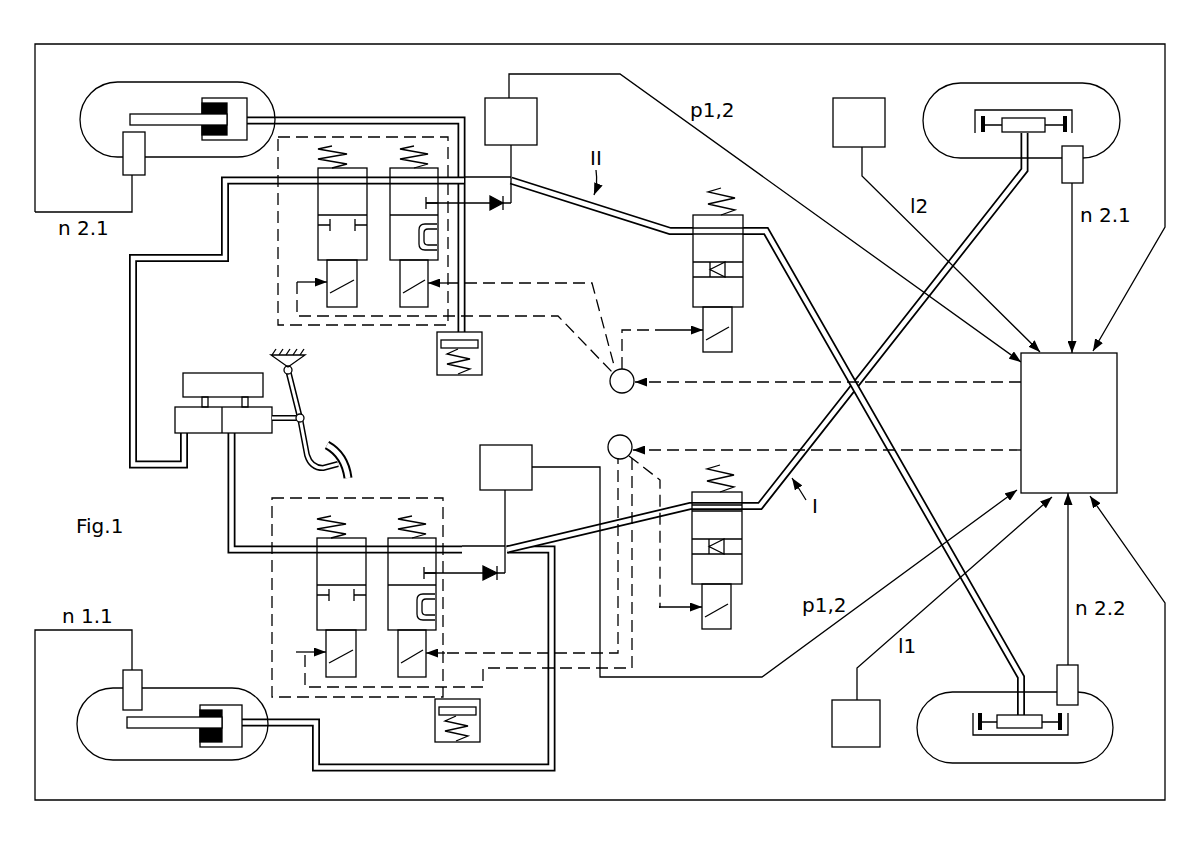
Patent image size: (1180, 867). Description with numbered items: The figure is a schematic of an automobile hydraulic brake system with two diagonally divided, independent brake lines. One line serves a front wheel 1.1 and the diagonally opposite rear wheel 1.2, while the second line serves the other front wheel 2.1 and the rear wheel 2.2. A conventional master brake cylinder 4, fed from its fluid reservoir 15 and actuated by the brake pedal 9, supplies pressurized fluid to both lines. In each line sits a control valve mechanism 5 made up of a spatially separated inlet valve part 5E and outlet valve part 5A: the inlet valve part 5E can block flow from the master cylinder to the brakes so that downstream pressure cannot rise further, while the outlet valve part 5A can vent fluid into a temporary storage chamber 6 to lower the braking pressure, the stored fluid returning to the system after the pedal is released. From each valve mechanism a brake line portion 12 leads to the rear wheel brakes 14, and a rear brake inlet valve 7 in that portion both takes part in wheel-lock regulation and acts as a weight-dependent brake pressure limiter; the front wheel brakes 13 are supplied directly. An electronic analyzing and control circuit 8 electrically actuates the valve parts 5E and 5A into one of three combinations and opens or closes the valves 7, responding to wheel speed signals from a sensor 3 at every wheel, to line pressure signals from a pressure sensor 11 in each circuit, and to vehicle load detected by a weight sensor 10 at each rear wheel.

The front wheel 1.1 is at (105, 752).
The rear wheel 1.2 is at (1083, 100).
The front wheel 2.1 is at (112, 100).
The rear wheel 2.2 is at (1085, 752).
The sensor 3 is at (140, 158).
The master brake cylinder 4 is at (250, 434).
The control valve mechanism 5 is at (375, 325).
The inlet valve part 5E is at (328, 240).
The outlet valve part 5A is at (400, 262).
The temporary storage chamber 6 is at (482, 360).
The rear brake inlet valve 7 is at (700, 250).
The electronic analyzing and control circuit 8 is at (1117, 410).
The brake pedal 9 is at (306, 432).
The weight sensor 10 is at (850, 105).
The pressure sensor 11 is at (493, 108).
The brake line portion 12 is at (893, 333).
The front wheel brake 13 is at (226, 106).
The rear wheel brake 14 is at (1015, 112).
The fluid reservoir 15 is at (218, 372).